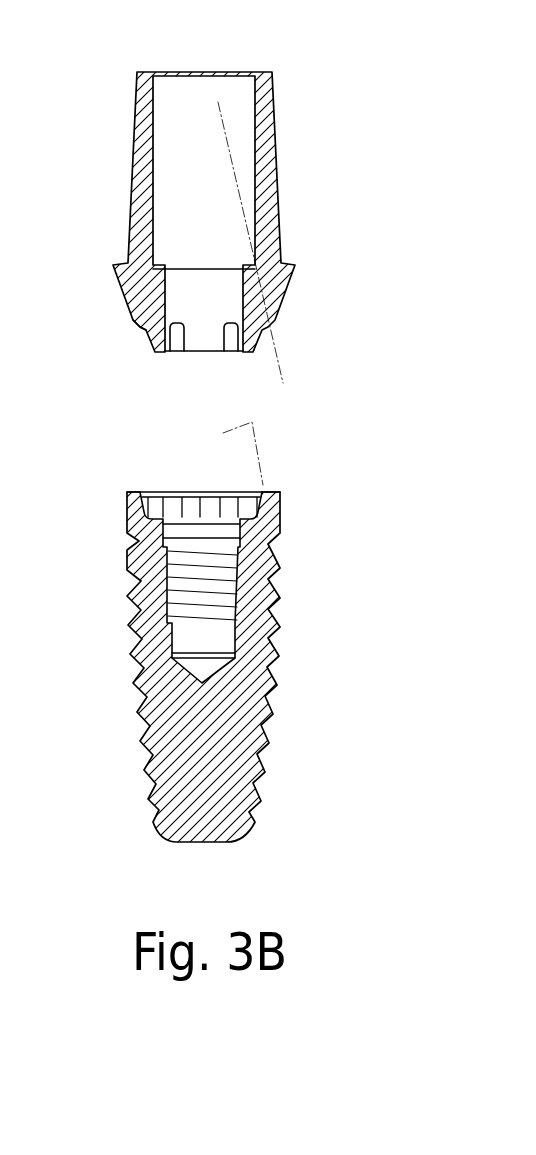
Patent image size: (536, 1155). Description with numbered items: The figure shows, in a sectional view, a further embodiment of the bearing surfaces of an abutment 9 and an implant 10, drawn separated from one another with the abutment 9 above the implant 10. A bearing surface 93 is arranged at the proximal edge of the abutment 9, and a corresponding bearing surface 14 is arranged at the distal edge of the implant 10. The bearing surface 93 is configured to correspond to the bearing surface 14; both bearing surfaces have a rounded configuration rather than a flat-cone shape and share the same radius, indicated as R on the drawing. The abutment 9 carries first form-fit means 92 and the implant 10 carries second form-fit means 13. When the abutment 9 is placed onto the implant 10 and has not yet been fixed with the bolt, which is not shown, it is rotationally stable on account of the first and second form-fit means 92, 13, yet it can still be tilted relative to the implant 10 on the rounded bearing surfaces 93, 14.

The abutment 9 is at (229, 240).
The first form-fit means 92 is at (203, 342).
The bearing surface 93 is at (147, 333).
The implant 10 is at (198, 632).
The second form-fit means 13 is at (253, 491).
The bearing surface 14 is at (135, 490).